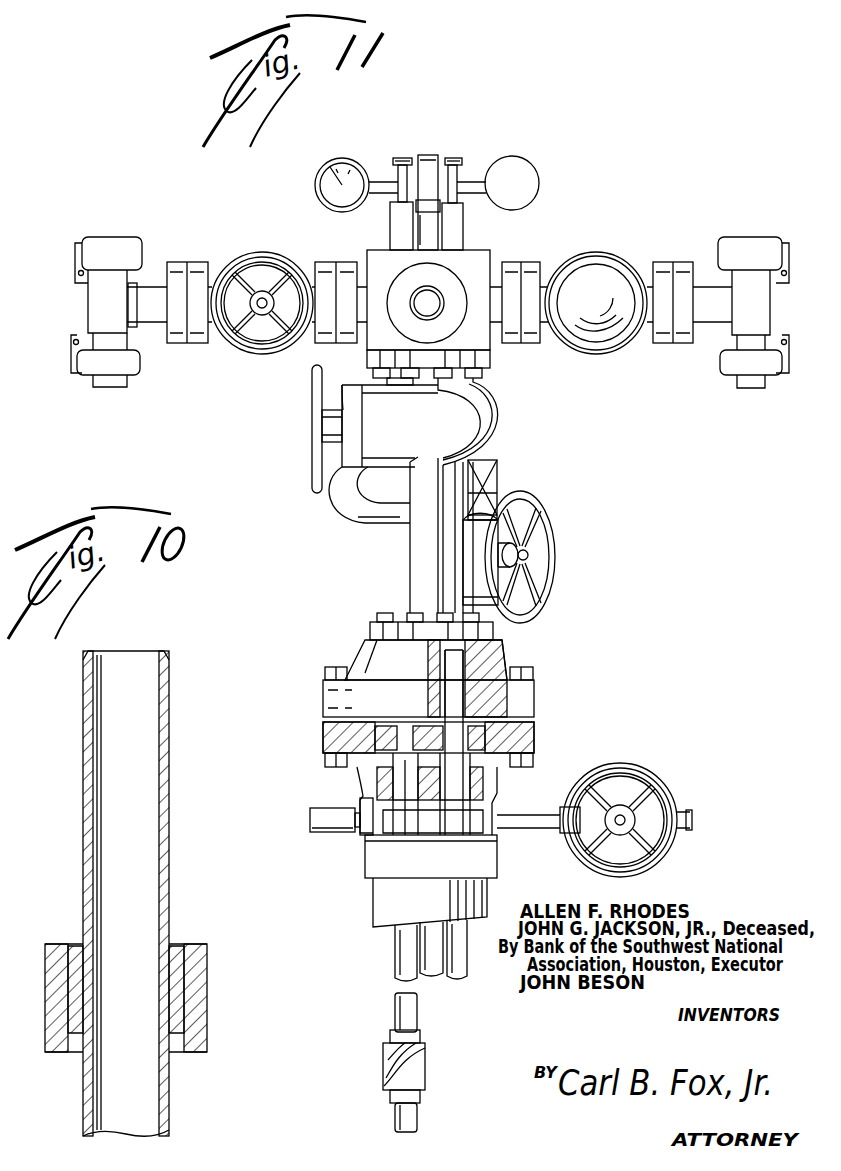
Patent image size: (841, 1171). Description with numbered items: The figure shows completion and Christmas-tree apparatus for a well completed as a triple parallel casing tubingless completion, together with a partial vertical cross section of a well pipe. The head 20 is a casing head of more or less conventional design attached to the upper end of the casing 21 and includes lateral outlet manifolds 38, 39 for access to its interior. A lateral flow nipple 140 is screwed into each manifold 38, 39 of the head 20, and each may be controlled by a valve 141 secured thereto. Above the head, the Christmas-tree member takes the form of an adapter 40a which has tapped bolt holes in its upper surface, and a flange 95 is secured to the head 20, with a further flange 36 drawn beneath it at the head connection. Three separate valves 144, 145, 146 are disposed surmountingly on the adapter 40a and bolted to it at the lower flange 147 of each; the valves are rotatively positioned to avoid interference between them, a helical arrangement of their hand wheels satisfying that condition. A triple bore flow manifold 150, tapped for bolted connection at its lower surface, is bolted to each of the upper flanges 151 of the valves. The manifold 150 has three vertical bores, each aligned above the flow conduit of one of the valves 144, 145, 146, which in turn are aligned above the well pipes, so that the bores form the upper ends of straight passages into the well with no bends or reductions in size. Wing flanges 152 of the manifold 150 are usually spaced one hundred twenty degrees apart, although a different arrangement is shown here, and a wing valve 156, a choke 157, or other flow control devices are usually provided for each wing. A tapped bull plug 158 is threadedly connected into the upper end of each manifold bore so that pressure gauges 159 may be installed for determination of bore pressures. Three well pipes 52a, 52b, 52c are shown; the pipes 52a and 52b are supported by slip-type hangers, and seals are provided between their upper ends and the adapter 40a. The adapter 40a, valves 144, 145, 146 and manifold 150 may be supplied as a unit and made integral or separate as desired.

The pressure gauge 159 is at (519, 156).
The tapped bull plug 158 is at (463, 229).
The triple bore flow manifold 150 is at (491, 253).
The wing flange 152 is at (378, 263).
The upper flange 151 is at (490, 365).
The wing valve 156 is at (598, 354).
The choke 157 is at (735, 348).
The valve 146 is at (490, 423).
The valve 145 is at (330, 502).
The valve 144 is at (556, 552).
The lower flange 147 is at (370, 630).
The adapter 40a is at (505, 644).
The flange 95 is at (537, 688).
The lower flange 36 is at (535, 732).
The head 20 is at (500, 780).
The lateral outlet manifold 38 is at (362, 800).
The lateral flow nipple 140 is at (310, 818).
The valve 141 is at (630, 765).
The lateral outlet manifold 39 is at (499, 842).
The casing 21 is at (490, 893).
The well pipe 52a is at (452, 980).
The well pipe 52b is at (396, 950).
The well pipe 52c is at (432, 940).